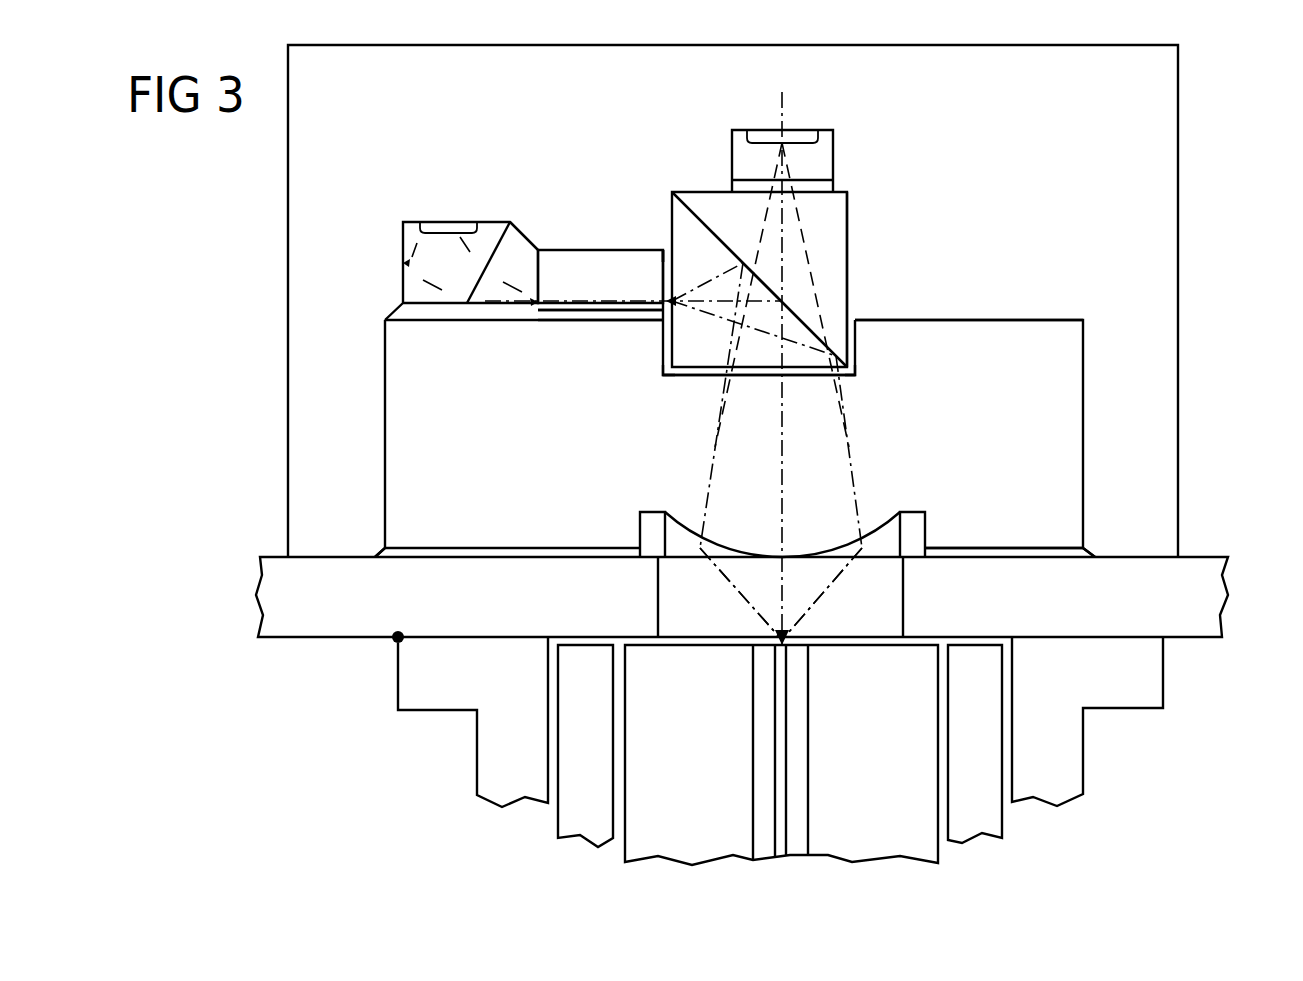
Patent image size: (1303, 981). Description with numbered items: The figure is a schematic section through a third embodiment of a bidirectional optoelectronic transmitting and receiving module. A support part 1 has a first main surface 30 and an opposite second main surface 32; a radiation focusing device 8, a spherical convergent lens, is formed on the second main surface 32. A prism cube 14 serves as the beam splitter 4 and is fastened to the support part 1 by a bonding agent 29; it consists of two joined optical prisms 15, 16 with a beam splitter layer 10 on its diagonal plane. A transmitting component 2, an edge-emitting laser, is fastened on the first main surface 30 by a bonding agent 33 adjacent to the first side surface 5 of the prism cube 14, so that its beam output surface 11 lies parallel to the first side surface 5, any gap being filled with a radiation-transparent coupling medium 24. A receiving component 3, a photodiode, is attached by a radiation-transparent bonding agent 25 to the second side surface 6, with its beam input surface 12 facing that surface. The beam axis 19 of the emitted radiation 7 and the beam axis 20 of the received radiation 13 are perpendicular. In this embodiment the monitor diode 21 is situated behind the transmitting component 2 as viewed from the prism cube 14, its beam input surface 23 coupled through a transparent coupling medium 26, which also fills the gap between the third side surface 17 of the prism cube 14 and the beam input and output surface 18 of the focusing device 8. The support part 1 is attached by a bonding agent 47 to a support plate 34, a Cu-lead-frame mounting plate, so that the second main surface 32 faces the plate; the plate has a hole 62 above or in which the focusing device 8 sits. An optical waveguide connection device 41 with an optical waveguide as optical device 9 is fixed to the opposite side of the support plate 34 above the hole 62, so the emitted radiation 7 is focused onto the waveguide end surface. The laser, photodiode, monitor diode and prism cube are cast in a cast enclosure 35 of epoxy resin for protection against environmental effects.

The support part 1 is at (968, 337).
The transmitting component 2 is at (568, 263).
The receiving component 3 is at (832, 140).
The beam splitter 4 is at (765, 250).
The prism cube 14 is at (708, 183).
The first side surface 5 is at (666, 240).
The second side surface 6 is at (680, 192).
The emitted radiation 7 is at (770, 337).
The radiation focusing device 8 is at (833, 562).
The optical device 9 is at (805, 718).
The beam splitter layer 10 is at (800, 310).
The transmitting component beam output surface 11 is at (663, 277).
The receiving component beam input surface 12 is at (810, 177).
The received radiation 13 is at (853, 487).
The optical prism 15 is at (833, 237).
The optical prism 16 is at (668, 200).
The third side surface 17 is at (683, 363).
The beam input and beam output surface 18 is at (803, 377).
The beam axis 19 is at (750, 265).
The beam axis 20 is at (783, 480).
The monitor diode 21 is at (415, 230).
The monitor diode beam input surface 23 is at (490, 245).
The radiation-transparent coupling medium 24 is at (663, 247).
The radiation-transparent bonding agent 25 is at (840, 180).
The transparent coupling medium 26 is at (522, 240).
The bonding agent 29 is at (665, 375).
The first main surface 30 is at (1023, 318).
The second main surface 32 is at (1033, 543).
The bonding agent 33 is at (550, 318).
The support plate 34 is at (1205, 598).
The cast enclosure 35 is at (1165, 210).
The optical waveguide connection device 41 is at (1093, 752).
The bonding agent 47 is at (383, 552).
The hole 62 is at (708, 619).